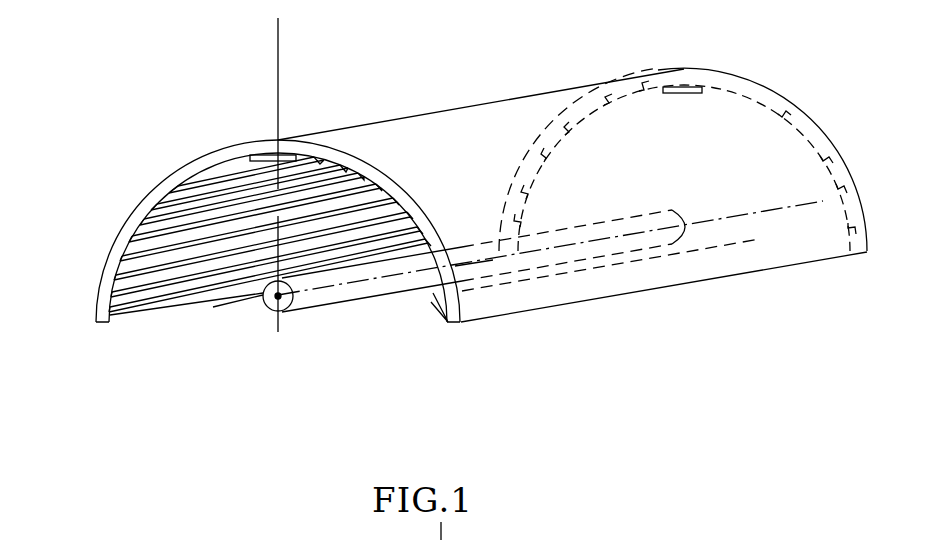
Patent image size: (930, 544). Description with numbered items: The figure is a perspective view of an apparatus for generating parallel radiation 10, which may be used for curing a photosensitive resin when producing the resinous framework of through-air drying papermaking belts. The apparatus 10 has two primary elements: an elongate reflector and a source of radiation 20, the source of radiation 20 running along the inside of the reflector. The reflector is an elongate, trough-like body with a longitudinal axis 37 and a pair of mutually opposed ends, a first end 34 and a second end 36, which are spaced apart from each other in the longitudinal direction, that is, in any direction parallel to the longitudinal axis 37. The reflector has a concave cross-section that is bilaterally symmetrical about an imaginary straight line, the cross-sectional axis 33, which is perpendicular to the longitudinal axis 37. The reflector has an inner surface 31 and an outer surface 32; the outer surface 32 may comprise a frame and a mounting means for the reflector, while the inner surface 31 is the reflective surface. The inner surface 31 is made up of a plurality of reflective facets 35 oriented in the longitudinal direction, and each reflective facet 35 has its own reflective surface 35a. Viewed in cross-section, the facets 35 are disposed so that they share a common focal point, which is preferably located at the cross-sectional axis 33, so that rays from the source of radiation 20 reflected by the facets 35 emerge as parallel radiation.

The apparatus for generating parallel radiation 10 is at (228, 84).
The source of radiation 20 is at (343, 293).
The inner surface 31 is at (220, 286).
The outer surface 32 is at (577, 290).
The cross-sectional axis 33 is at (283, 48).
The first end 34 is at (119, 245).
The reflective facets 35 is at (127, 310).
The reflective surface 35a is at (173, 270).
The second end 36 is at (630, 90).
The longitudinal axis 37 is at (800, 208).